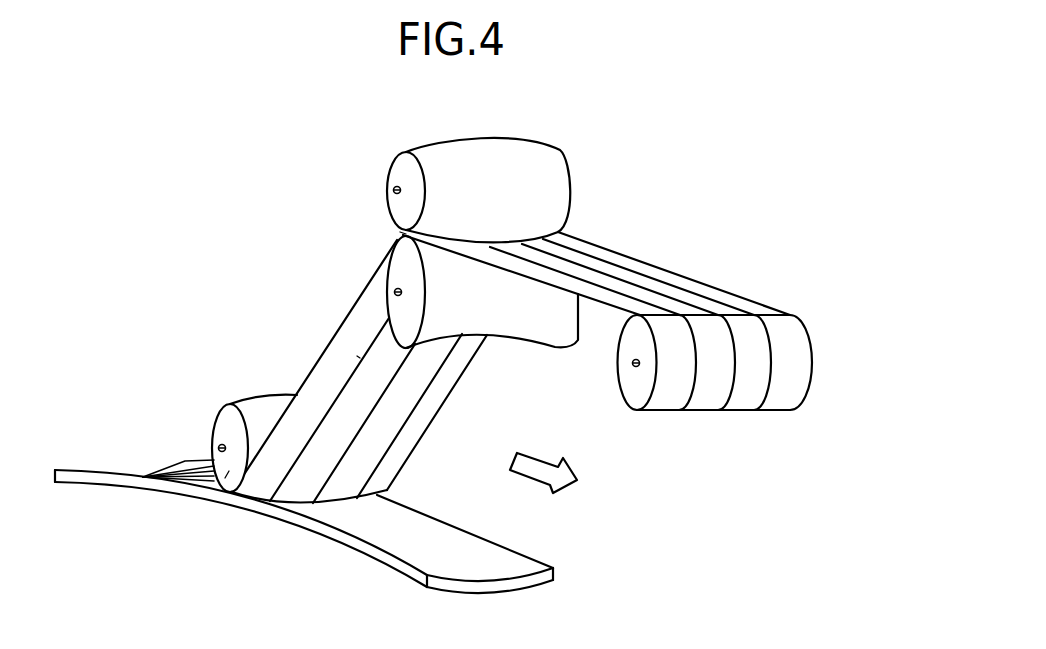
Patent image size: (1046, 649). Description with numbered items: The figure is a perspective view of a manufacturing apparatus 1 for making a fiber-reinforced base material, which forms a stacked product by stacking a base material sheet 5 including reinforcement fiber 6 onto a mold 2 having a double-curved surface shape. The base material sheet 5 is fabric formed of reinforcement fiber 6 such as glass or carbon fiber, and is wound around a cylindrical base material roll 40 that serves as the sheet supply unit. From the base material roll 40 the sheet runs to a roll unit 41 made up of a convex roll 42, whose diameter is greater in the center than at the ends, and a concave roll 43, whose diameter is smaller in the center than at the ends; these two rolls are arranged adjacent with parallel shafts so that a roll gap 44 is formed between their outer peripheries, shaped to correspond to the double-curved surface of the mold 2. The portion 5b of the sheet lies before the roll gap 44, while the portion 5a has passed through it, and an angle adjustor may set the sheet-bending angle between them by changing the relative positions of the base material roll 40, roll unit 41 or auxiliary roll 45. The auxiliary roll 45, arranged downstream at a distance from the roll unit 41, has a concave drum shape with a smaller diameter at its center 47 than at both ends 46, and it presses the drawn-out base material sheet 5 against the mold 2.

The manufacturing apparatus 1 is at (632, 193).
The mold 2 is at (375, 562).
The base material sheet 5 is at (358, 323).
The portion of the base material sheet having passed through the roll gap 5a is at (440, 388).
The portion of the base material sheet before passing through the roll gap 5b is at (653, 272).
The reinforcement fiber 6 is at (358, 357).
The base material roll 40 is at (735, 410).
The roll unit 41 is at (503, 137).
The convex roll 42 is at (437, 158).
The concave roll 43 is at (520, 325).
The roll gap 44 is at (400, 233).
The auxiliary roll 45 is at (227, 475).
The both ends of the auxiliary roll 46 is at (228, 405).
The center of the auxiliary roll 47 is at (288, 395).